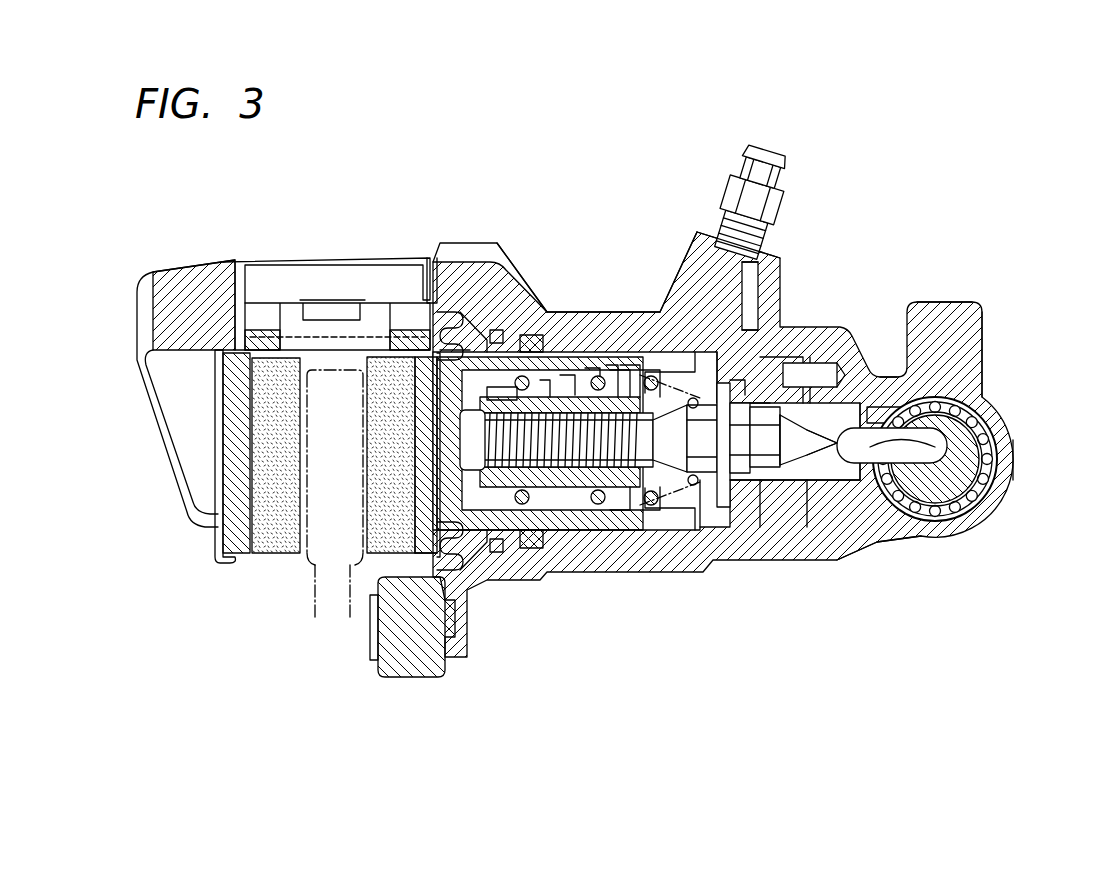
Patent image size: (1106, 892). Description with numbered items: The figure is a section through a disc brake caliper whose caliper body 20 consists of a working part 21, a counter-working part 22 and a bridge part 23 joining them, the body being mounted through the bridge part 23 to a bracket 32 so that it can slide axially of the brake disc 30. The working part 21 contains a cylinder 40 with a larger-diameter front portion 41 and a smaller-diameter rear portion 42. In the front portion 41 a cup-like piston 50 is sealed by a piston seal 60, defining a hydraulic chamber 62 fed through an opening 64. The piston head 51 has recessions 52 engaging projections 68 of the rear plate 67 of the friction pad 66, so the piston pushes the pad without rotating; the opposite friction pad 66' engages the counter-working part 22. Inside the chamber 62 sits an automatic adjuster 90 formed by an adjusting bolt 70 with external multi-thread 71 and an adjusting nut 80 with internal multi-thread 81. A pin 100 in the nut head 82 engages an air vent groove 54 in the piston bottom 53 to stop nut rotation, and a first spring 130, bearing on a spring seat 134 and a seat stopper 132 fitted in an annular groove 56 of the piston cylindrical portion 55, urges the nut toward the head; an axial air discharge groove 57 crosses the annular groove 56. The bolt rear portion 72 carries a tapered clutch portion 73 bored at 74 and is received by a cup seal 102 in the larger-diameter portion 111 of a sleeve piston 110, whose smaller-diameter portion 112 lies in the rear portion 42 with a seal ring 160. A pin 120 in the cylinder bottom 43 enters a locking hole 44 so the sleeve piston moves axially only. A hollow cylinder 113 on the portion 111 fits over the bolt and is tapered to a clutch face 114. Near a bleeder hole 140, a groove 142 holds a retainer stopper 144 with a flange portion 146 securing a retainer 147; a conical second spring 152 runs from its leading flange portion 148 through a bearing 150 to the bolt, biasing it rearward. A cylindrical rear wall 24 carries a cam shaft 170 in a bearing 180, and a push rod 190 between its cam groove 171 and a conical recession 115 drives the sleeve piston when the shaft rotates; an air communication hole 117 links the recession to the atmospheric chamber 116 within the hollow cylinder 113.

The caliper body 20 is at (332, 248).
The working part 21 is at (466, 280).
The counter-working part 22 is at (172, 425).
The bridge part 23 is at (272, 262).
The rear wall 24 is at (992, 402).
The brake disc 30 is at (315, 608).
The bracket 32 is at (416, 680).
The cylinder 40 is at (540, 562).
The front portion 41 is at (583, 556).
The rear portion 42 is at (932, 380).
The bottom 43 is at (852, 547).
The locking hole 44 is at (878, 330).
The piston 50 is at (590, 482).
The head 51 is at (452, 395).
The recessions 52 is at (421, 500).
The bottom 53 is at (470, 548).
The air vent groove 54 is at (452, 435).
The cylindrical portion 55 is at (556, 532).
The annular groove 56 is at (620, 527).
The air discharge groove 57 is at (660, 350).
The piston seal 60 is at (531, 335).
The hydraulic chamber 62 is at (630, 380).
The opening 64 is at (800, 482).
The friction pad 66 is at (365, 455).
The friction pad 66' is at (268, 479).
The rear plate 67 is at (428, 557).
The projections 68 is at (420, 470).
The adjusting bolt 70 is at (666, 562).
The external multi-thread 71 is at (548, 392).
The rear portion 72 is at (792, 410).
The tapered clutch portion 73 is at (771, 502).
The bore 74 is at (772, 372).
The adjusting nut 80 is at (641, 522).
The internal multi-thread 81 is at (578, 392).
The head 82 is at (522, 517).
The automatic adjuster 90 is at (678, 738).
The pin 100 is at (508, 380).
The cup seal 102 is at (762, 392).
The sleeve piston 110 is at (822, 415).
The larger-diameter portion 111 is at (781, 517).
The smaller-diameter portion 112 is at (845, 372).
The hollow cylinder 113 is at (862, 522).
The clutch face 114 is at (762, 340).
The conical recession 115 is at (937, 507).
The atmospheric chamber 116 is at (882, 532).
The air communication hole 117 is at (902, 542).
The pin 120 is at (840, 365).
The first spring 130 is at (530, 528).
The seat stopper 132 is at (617, 370).
The spring seat 134 is at (605, 375).
The bleeder hole 140 is at (722, 222).
The groove 142 is at (701, 507).
The retainer stopper 144 is at (698, 320).
The flange portion 146 is at (776, 222).
The retainer 147 is at (722, 522).
The leading flange portion 148 is at (635, 512).
The bearing 150 is at (746, 482).
The second spring 152 is at (670, 325).
The seal ring 160 is at (922, 522).
The cam shaft 170 is at (942, 447).
The cam groove 171 is at (942, 400).
The bearing 180 is at (1002, 465).
The push rod 190 is at (962, 500).